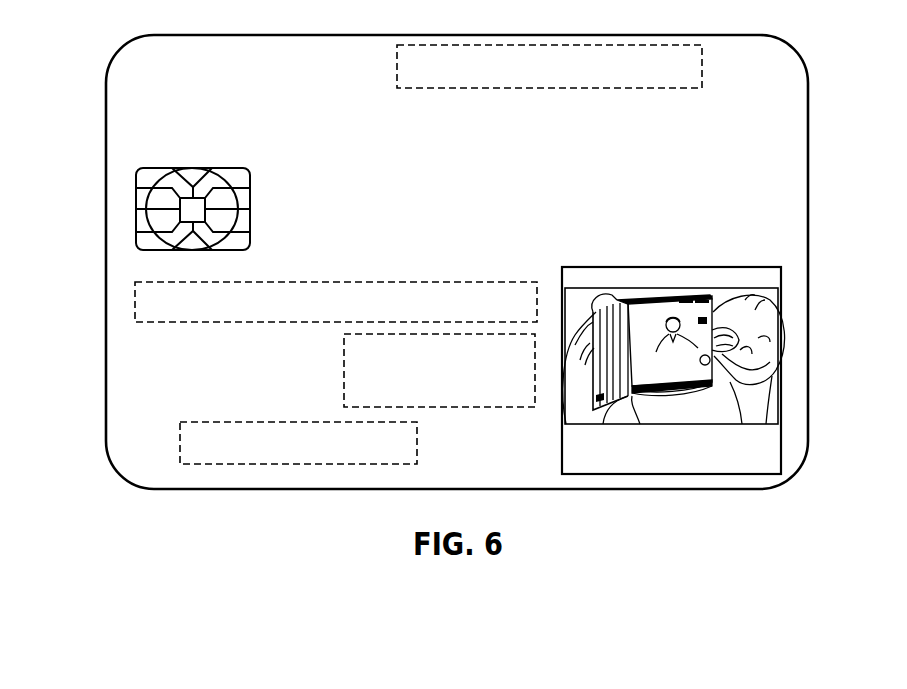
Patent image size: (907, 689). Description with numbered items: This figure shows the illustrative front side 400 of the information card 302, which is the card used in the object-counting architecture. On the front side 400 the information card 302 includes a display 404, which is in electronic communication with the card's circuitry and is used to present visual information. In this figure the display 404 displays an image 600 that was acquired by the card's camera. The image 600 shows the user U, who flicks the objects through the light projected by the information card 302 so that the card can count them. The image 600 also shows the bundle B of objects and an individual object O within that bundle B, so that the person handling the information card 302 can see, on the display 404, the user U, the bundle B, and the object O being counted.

The information card 302 is at (808, 263).
The front side 400 is at (483, 172).
The display 404 is at (781, 446).
The image 600 is at (637, 359).
The user U is at (764, 338).
The object O is at (617, 402).
The bundle B is at (697, 390).